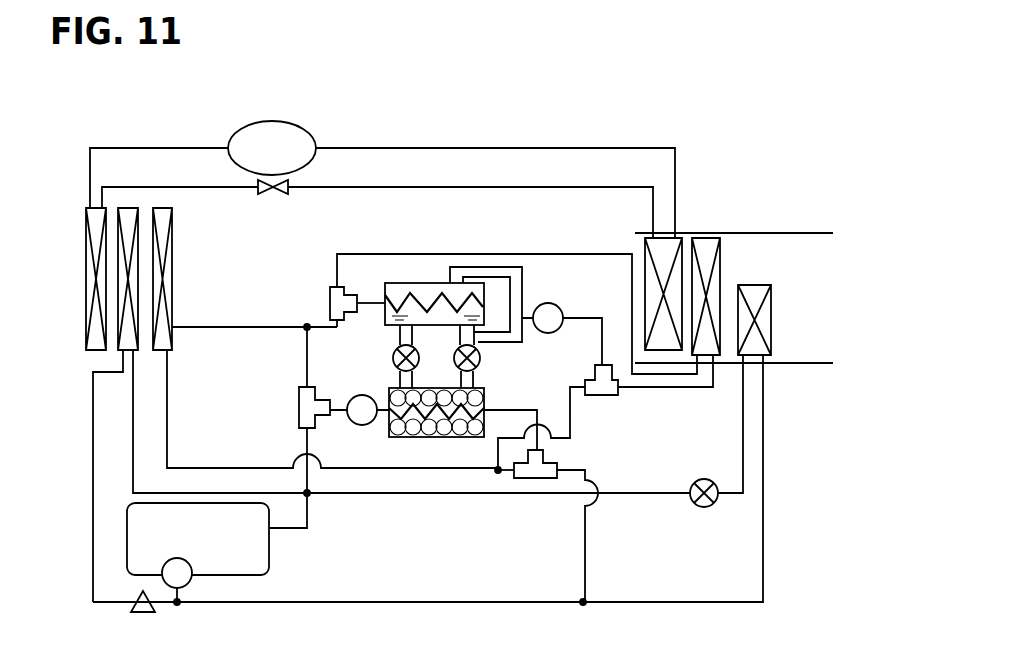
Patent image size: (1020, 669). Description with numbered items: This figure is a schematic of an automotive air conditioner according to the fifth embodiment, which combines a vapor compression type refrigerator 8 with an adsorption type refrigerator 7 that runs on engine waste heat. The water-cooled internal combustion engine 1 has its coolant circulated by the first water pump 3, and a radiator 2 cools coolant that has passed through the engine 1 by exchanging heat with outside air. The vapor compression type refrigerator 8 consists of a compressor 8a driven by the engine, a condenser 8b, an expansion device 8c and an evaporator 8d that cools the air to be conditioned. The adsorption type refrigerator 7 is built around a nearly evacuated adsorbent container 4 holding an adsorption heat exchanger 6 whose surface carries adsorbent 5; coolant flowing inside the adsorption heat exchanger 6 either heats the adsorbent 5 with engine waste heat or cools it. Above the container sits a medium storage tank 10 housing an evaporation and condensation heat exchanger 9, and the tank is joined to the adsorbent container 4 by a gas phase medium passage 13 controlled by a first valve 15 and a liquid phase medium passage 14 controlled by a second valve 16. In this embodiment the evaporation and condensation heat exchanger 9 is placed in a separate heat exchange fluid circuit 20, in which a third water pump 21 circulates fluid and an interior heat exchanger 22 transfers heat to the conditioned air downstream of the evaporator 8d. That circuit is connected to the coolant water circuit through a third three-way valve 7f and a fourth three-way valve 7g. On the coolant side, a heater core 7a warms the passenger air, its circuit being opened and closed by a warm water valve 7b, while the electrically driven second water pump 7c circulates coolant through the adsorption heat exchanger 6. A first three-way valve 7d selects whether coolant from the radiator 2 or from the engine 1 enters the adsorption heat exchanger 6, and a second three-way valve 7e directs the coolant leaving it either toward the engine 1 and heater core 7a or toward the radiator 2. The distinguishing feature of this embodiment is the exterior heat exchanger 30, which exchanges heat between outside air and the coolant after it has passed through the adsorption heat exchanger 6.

The internal combustion engine 1 is at (269, 556).
The radiator 2 is at (118, 300).
The first water pump 3 is at (162, 575).
The adsorbent container 4 is at (484, 421).
The adsorbent 5 is at (460, 437).
The adsorption heat exchanger 6 is at (410, 437).
The adsorption type refrigerator 7 is at (652, 421).
The heater core 7a is at (771, 336).
The warm water valve 7b is at (705, 507).
The second water pump 7c is at (361, 425).
The first three-way valve 7d is at (299, 408).
The second three-way valve 7e is at (553, 464).
The third three-way valve 7f is at (330, 303).
The fourth three-way valve 7g is at (605, 395).
The vapor compression type refrigerator 8 is at (198, 134).
The compressor 8a is at (290, 121).
The condenser 8b is at (86, 252).
The expansion device 8c is at (278, 196).
The evaporator 8d is at (684, 246).
The evaporation and condensation heat exchanger 9 is at (433, 292).
The medium storage tank 10 is at (398, 283).
The gas phase medium passage 13 is at (505, 343).
The liquid phase medium passage 14 is at (398, 333).
The first valve 15 is at (478, 366).
The second valve 16 is at (393, 358).
The heat exchange fluid circuit 20 is at (337, 262).
The third water pump 21 is at (546, 303).
The interior heat exchanger 22 is at (720, 252).
The exterior heat exchanger 30 is at (173, 277).